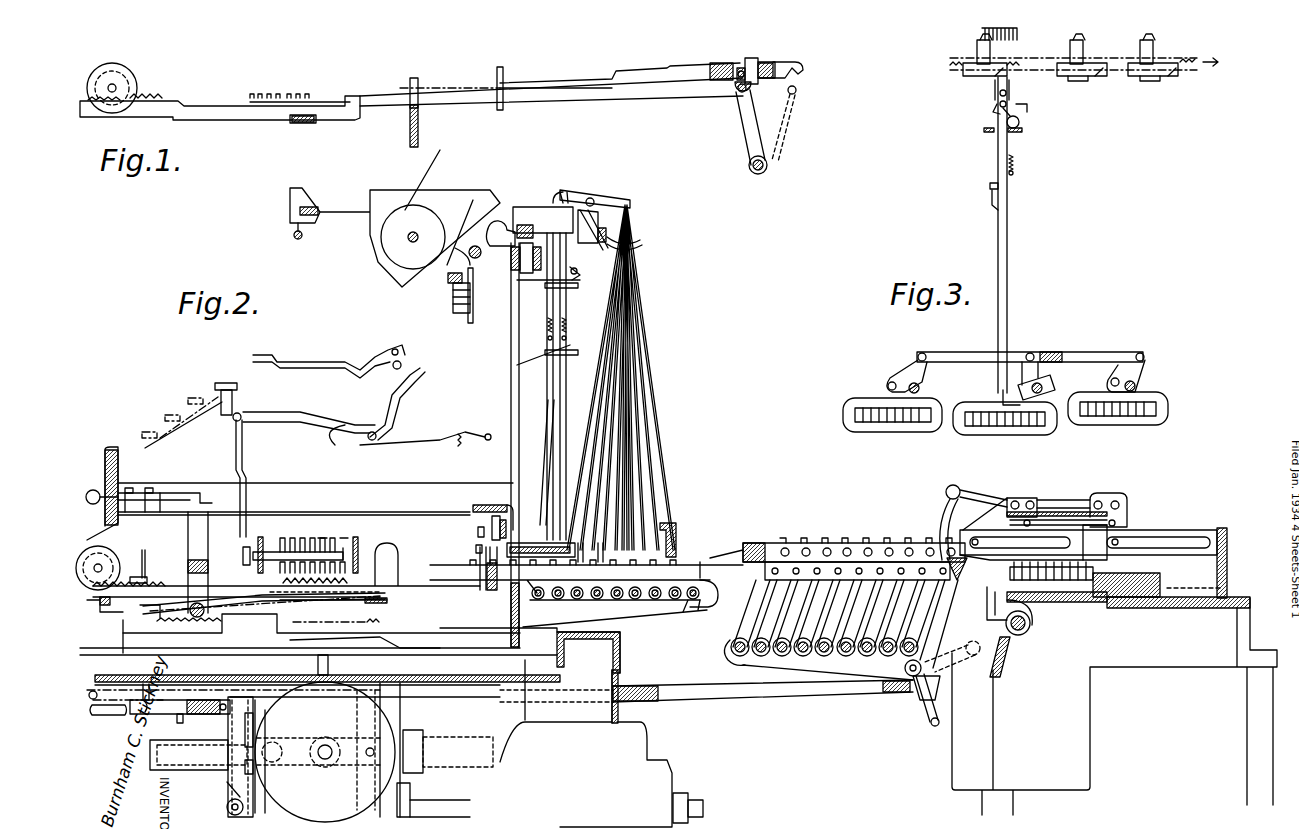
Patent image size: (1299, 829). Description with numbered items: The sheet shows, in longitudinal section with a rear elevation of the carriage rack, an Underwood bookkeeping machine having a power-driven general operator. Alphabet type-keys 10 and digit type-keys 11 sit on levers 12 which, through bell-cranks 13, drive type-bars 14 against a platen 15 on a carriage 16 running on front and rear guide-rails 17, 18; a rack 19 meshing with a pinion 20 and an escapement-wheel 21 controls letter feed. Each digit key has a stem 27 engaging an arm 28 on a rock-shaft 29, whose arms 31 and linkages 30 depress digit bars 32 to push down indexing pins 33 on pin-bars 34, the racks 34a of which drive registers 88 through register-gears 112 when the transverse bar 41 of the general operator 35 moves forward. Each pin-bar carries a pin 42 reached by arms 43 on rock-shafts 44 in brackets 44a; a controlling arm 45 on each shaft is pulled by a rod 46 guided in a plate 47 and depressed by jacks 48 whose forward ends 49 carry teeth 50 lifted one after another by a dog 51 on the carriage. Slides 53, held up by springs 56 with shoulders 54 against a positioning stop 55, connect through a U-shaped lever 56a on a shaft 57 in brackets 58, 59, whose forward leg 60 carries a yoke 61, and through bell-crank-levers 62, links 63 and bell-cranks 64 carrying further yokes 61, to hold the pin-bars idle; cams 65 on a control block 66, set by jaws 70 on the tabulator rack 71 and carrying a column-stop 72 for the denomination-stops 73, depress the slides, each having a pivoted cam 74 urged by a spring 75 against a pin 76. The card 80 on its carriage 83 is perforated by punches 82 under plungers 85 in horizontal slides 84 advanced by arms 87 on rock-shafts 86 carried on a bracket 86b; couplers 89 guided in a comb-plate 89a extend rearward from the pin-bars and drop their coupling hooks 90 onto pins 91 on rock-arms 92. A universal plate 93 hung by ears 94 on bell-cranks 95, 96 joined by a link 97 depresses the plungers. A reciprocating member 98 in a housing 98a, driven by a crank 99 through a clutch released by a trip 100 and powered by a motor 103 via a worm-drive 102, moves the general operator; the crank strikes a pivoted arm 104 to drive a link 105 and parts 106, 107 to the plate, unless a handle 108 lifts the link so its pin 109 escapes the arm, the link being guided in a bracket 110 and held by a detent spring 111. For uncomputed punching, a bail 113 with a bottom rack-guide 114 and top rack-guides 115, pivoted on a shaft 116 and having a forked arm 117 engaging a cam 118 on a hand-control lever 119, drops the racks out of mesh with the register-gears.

In FIG. 2, the alphabet type-keys 10 is at (175, 418).
In FIG. 2, the digit type-keys 11 is at (228, 382).
In FIG. 2, the levers 12 is at (292, 412).
In FIG. 2, the bell-cranks 13 is at (393, 395).
In FIG. 2, the type-bars 14 is at (322, 358).
In FIG. 2, the platen 15 is at (413, 237).
In FIG. 2, the carriage 16 is at (390, 273).
In FIG. 2, the front guide-rail 17 is at (296, 238).
In FIG. 2, the rear guide-rail 18 is at (477, 246).
In FIG. 2, the rack 19 is at (450, 284).
In FIG. 2, the pinion 20 is at (460, 313).
In FIG. 2, the escapement-wheel 21 is at (474, 315).
In FIG. 2, the stem 27 is at (247, 458).
In FIG. 2, the arm 28 is at (246, 566).
In FIG. 2, the rock-shaft 29 is at (268, 552).
In FIG. 2, the linkages 30 is at (322, 538).
In FIG. 2, the arms 31 is at (312, 540).
In FIG. 2, the digit bars 32 is at (286, 570).
In FIG. 1, the indexing pins 33 is at (268, 95).
In FIG. 2, the indexing pins 33 is at (343, 548).
In FIG. 1, the pin-bars 34 is at (260, 110).
In FIG. 3, the pin-bars 34 is at (876, 424).
In FIG. 2, the pin-bars 34 is at (356, 583).
In FIG. 1, the racks 34a is at (152, 97).
In FIG. 2, the racks 34a is at (165, 580).
In FIG. 2, the general operator 35 is at (236, 644).
In FIG. 1, the transverse bar 41 is at (305, 120).
In FIG. 2, the transverse bar 41 is at (395, 605).
In FIG. 2, the pin 42 is at (700, 573).
In FIG. 2, the arms 43 is at (708, 595).
In FIG. 2, the rock-shafts 44 is at (683, 612).
In FIG. 2, the brackets 44a is at (655, 616).
In FIG. 2, the controlling arm 45 is at (575, 600).
In FIG. 2, the rod 46 is at (640, 353).
In FIG. 2, the plate 47 is at (641, 243).
In FIG. 2, the jacks 48 is at (620, 200).
In FIG. 2, the forward end 49 is at (590, 197).
In FIG. 3, the tooth 50 is at (1015, 40).
In FIG. 2, the tooth 50 is at (558, 196).
In FIG. 3, the dog 51 is at (982, 36).
In FIG. 2, the dog 51 is at (568, 194).
In FIG. 3, the slides 53 is at (1008, 245).
In FIG. 2, the slides 53 is at (560, 403).
In FIG. 3, the shoulders 54 is at (992, 196).
In FIG. 3, the positioning stop 55 is at (990, 183).
In FIG. 2, the positioning stop 55 is at (545, 352).
In FIG. 3, the springs 56 is at (1016, 157).
In FIG. 2, the springs 56 is at (546, 327).
In FIG. 3, the U-shaped lever 56a is at (1052, 384).
In FIG. 2, the U-shaped lever 56a is at (575, 533).
In FIG. 2, the shaft 57 is at (528, 543).
In FIG. 2, the stationary bracket 58 is at (476, 550).
In FIG. 2, the stationary bracket 59 is at (598, 545).
In FIG. 2, the forward leg 60 is at (478, 533).
In FIG. 1, the yoke 61 is at (498, 70).
In FIG. 3, the yoke 61 is at (935, 432).
In FIG. 2, the yoke 61 is at (484, 596).
In FIG. 3, the bell-crank-levers 62 is at (1031, 351).
In FIG. 2, the bell-crank-levers 62 is at (492, 526).
In FIG. 3, the links 63 is at (970, 352).
In FIG. 2, the links 63 is at (497, 505).
In FIG. 3, the bell-cranks 64 is at (905, 370).
In FIG. 3, the cams 65 is at (1010, 70).
In FIG. 2, the cams 65 is at (598, 235).
In FIG. 3, the control block 66 is at (977, 48).
In FIG. 2, the control block 66 is at (543, 220).
In FIG. 2, the jaws 70 is at (508, 225).
In FIG. 3, the rack 71 is at (1193, 60).
In FIG. 2, the rack 71 is at (525, 224).
In FIG. 3, the column-stop 72 is at (1082, 81).
In FIG. 2, the denomination-stops 73 is at (526, 258).
In FIG. 3, the cam 74 is at (995, 80).
In FIG. 2, the cam 74 is at (598, 240).
In FIG. 3, the spring 75 is at (1020, 121).
In FIG. 3, the pin 76 is at (996, 110).
In FIG. 2, the pin 76 is at (580, 275).
In FIG. 2, the card 80 is at (1100, 605).
In FIG. 2, the punches 82 is at (1012, 566).
In FIG. 2, the carriage 83 is at (992, 606).
In FIG. 1, the horizontal slide 84 is at (752, 60).
In FIG. 2, the horizontal slide 84 is at (995, 530).
In FIG. 2, the plunger 85 is at (1083, 547).
In FIG. 1, the rock-shafts 86 is at (762, 172).
In FIG. 2, the rock-shafts 86 is at (748, 657).
In FIG. 2, the bracket 86b is at (727, 655).
In FIG. 1, the arm 87 is at (744, 66).
In FIG. 2, the arm 87 is at (790, 548).
In FIG. 1, the registers 88 is at (122, 70).
In FIG. 2, the registers 88 is at (115, 552).
In FIG. 1, the couplers 89 is at (700, 70).
In FIG. 2, the couplers 89 is at (752, 543).
In FIG. 2, the comb-plate 89a is at (674, 528).
In FIG. 1, the coupling hook 90 is at (802, 64).
In FIG. 2, the coupling hook 90 is at (957, 580).
In FIG. 1, the pin 91 is at (736, 87).
In FIG. 2, the pin 91 is at (952, 605).
In FIG. 1, the rock-arms 92 is at (766, 128).
In FIG. 2, the rock-arms 92 is at (765, 610).
In FIG. 2, the universal plate 93 is at (1033, 503).
In FIG. 2, the ears 94 is at (1014, 498).
In FIG. 2, the bell-crank 95 is at (1116, 500).
In FIG. 2, the bell-crank 96 is at (1031, 500).
In FIG. 2, the link 97 is at (1062, 510).
In FIG. 2, the reciprocating member 98 is at (395, 688).
In FIG. 2, the housing 98a is at (412, 730).
In FIG. 2, the crank 99 is at (345, 770).
In FIG. 2, the trip 100 is at (330, 660).
In FIG. 2, the worm-drive 102 is at (410, 788).
In FIG. 2, the motor 103 is at (601, 743).
In FIG. 2, the pivoted arm 104 is at (255, 726).
In FIG. 2, the link 105 is at (712, 695).
In FIG. 2, the motion-transmitting part 106 is at (925, 718).
In FIG. 2, the motion-transmitting part 107 is at (942, 505).
In FIG. 2, the handle 108 is at (98, 672).
In FIG. 2, the pin 109 is at (220, 715).
In FIG. 2, the bracket 110 is at (175, 722).
In FIG. 2, the detent spring 111 is at (140, 680).
In FIG. 2, the register-gears 112 is at (133, 577).
In FIG. 2, the bail 113 is at (150, 620).
In FIG. 2, the bottom rack-guide 114 is at (108, 610).
In FIG. 2, the top rack-guides 115 is at (146, 572).
In FIG. 2, the shaft 116 is at (225, 605).
In FIG. 2, the arm 117 is at (208, 540).
In FIG. 2, the cam 118 is at (212, 496).
In FIG. 2, the hand-control lever 119 is at (98, 490).